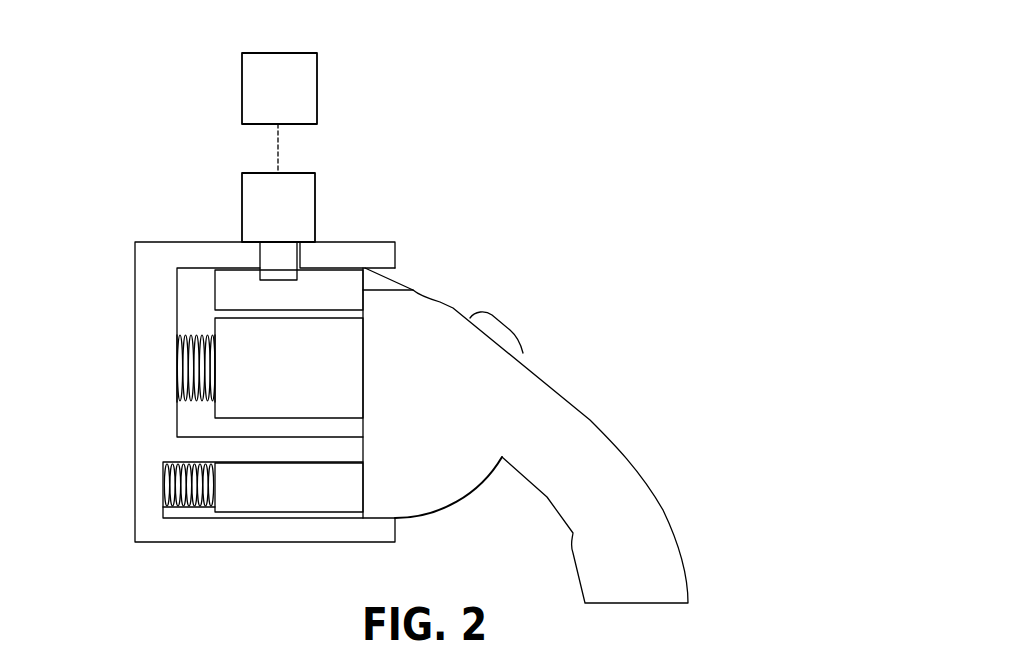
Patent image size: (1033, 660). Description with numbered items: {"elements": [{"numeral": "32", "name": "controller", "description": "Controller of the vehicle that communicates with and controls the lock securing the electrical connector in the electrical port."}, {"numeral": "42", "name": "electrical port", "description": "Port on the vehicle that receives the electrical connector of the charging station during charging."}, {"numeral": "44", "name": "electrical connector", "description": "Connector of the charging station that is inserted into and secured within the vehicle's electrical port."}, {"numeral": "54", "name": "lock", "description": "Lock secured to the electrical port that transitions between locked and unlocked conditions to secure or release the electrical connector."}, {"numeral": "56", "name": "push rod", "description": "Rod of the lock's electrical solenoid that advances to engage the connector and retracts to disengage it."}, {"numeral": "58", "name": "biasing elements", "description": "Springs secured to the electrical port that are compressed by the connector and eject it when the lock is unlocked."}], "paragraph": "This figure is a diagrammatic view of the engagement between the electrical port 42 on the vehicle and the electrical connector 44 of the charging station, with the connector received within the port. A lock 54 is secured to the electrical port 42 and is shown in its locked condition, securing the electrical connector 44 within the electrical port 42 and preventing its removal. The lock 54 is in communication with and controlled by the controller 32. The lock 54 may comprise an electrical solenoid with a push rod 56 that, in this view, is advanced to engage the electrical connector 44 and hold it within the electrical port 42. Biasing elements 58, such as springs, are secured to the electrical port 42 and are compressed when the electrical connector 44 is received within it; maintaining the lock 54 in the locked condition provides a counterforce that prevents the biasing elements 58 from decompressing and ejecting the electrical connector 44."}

The controller 32 is at (278, 53).
The housing 42 is at (135, 297).
The handle 44 is at (457, 307).
The locking mechanism 54 is at (315, 173).
The slot 56 is at (277, 260).
The spring 58 is at (178, 377).